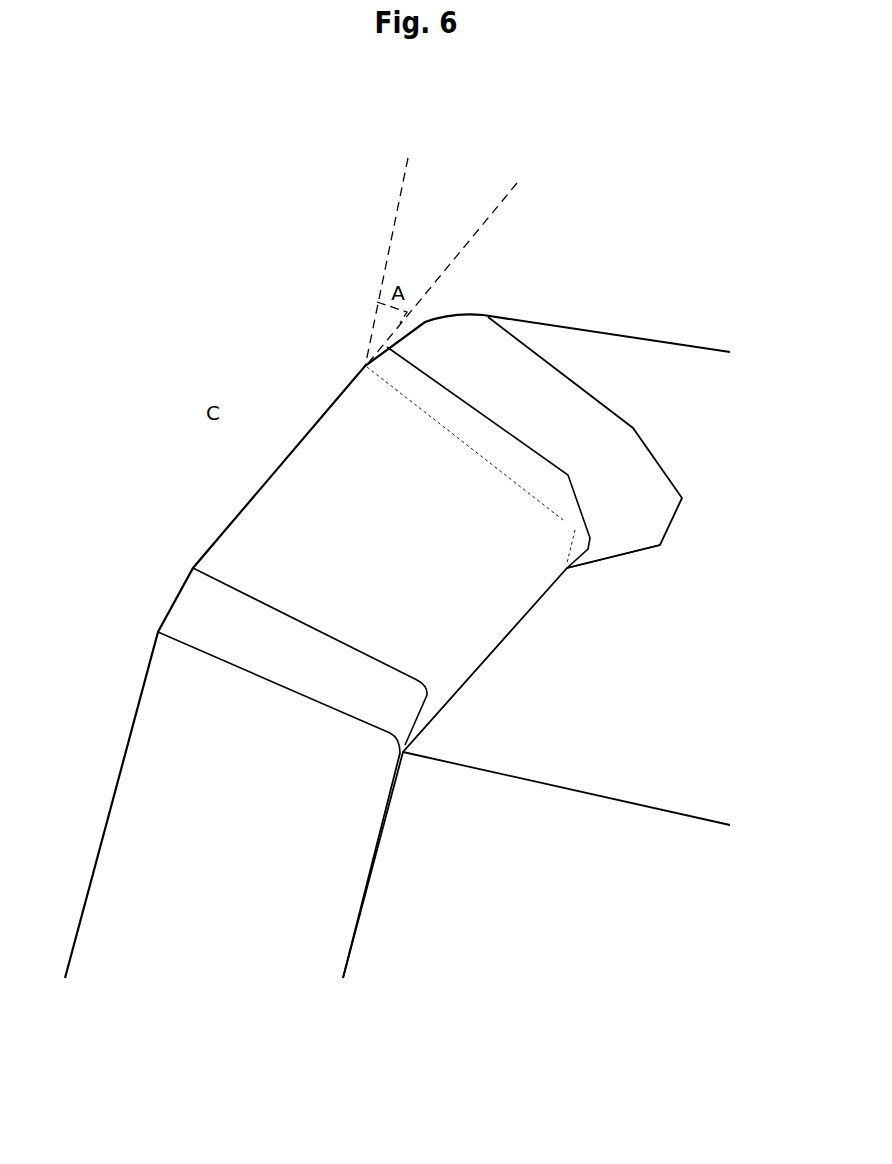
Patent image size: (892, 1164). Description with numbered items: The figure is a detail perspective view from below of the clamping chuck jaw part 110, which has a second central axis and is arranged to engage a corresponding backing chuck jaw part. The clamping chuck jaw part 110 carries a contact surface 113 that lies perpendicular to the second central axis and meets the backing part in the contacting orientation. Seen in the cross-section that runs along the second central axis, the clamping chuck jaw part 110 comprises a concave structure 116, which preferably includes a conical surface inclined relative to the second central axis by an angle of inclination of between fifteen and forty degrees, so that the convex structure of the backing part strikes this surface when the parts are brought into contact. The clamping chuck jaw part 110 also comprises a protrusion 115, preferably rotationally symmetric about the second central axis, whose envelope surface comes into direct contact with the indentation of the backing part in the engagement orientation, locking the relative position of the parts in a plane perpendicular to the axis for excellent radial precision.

The clamping chuck jaw part 110 is at (697, 610).
The contact surface 113 is at (566, 685).
The protrusion 115 is at (232, 805).
The concave structure 116 is at (374, 550).